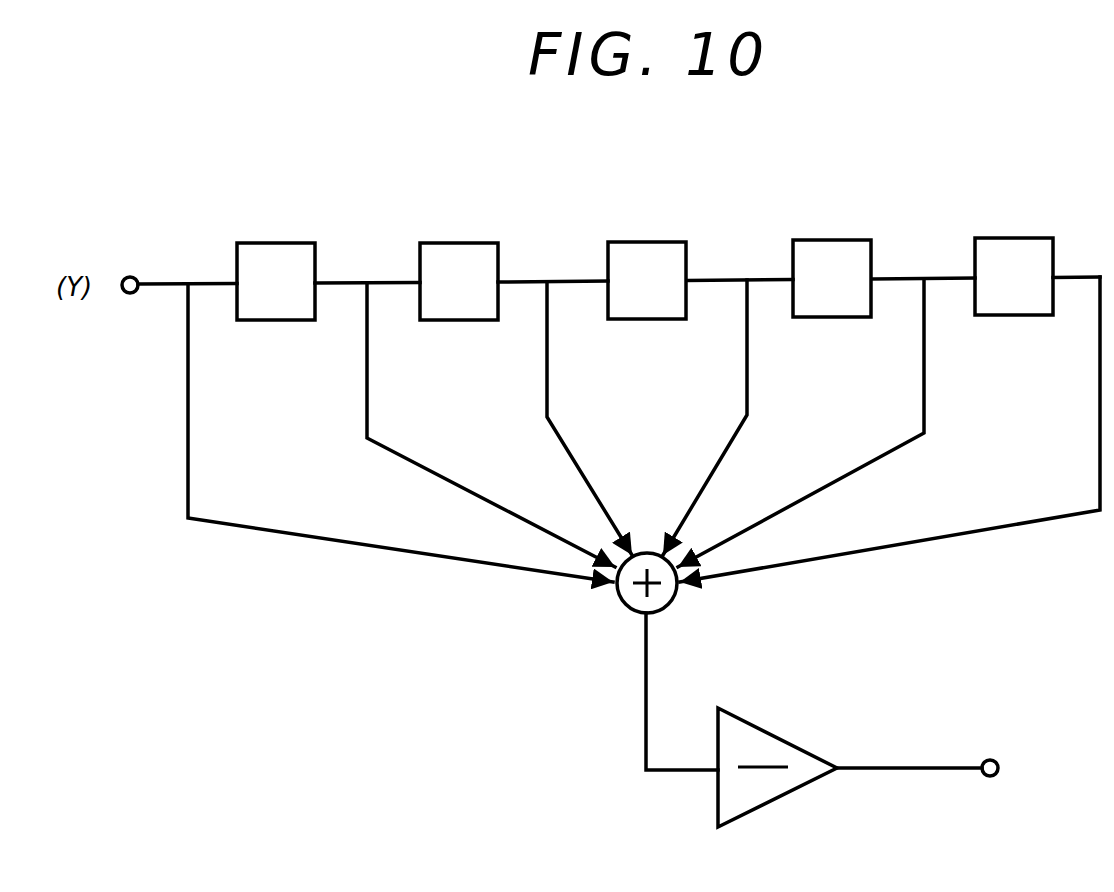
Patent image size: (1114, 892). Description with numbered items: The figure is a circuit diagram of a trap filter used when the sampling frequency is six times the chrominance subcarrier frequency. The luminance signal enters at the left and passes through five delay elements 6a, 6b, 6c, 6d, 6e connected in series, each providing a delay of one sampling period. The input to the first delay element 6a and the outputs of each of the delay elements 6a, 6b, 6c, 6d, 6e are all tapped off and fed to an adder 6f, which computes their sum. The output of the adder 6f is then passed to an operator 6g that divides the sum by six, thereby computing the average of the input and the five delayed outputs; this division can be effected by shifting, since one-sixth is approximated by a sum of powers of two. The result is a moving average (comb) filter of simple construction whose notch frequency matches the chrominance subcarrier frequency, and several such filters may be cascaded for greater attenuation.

The delay element 6a is at (268, 243).
The delay element 6b is at (450, 243).
The delay element 6c is at (638, 242).
The delay element 6d is at (828, 240).
The delay element 6e is at (1015, 238).
The adder 6f is at (620, 605).
The operator 6g is at (785, 738).